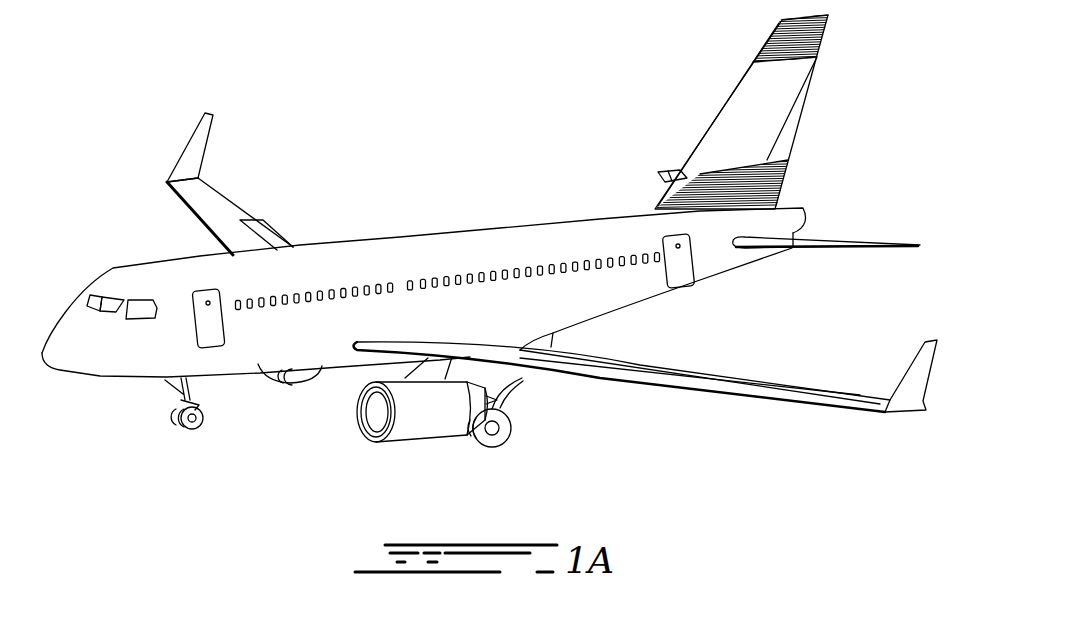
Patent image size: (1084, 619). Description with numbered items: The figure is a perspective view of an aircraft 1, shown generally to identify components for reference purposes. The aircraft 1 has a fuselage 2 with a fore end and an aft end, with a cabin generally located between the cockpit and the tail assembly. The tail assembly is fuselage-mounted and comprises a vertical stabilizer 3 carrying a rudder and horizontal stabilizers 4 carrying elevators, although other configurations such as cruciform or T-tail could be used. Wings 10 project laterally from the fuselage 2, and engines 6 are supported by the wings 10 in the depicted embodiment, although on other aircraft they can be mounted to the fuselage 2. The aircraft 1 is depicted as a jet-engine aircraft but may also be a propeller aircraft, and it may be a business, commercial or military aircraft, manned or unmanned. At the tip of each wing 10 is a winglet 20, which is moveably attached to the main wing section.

The aircraft 1 is at (406, 180).
The fuselage 2 is at (247, 355).
The vertical stabilizer 3 is at (752, 110).
The horizontal stabilizers 4 is at (667, 182).
The engines 6 is at (428, 418).
The wings 10 is at (235, 200).
The winglet 20 is at (203, 95).